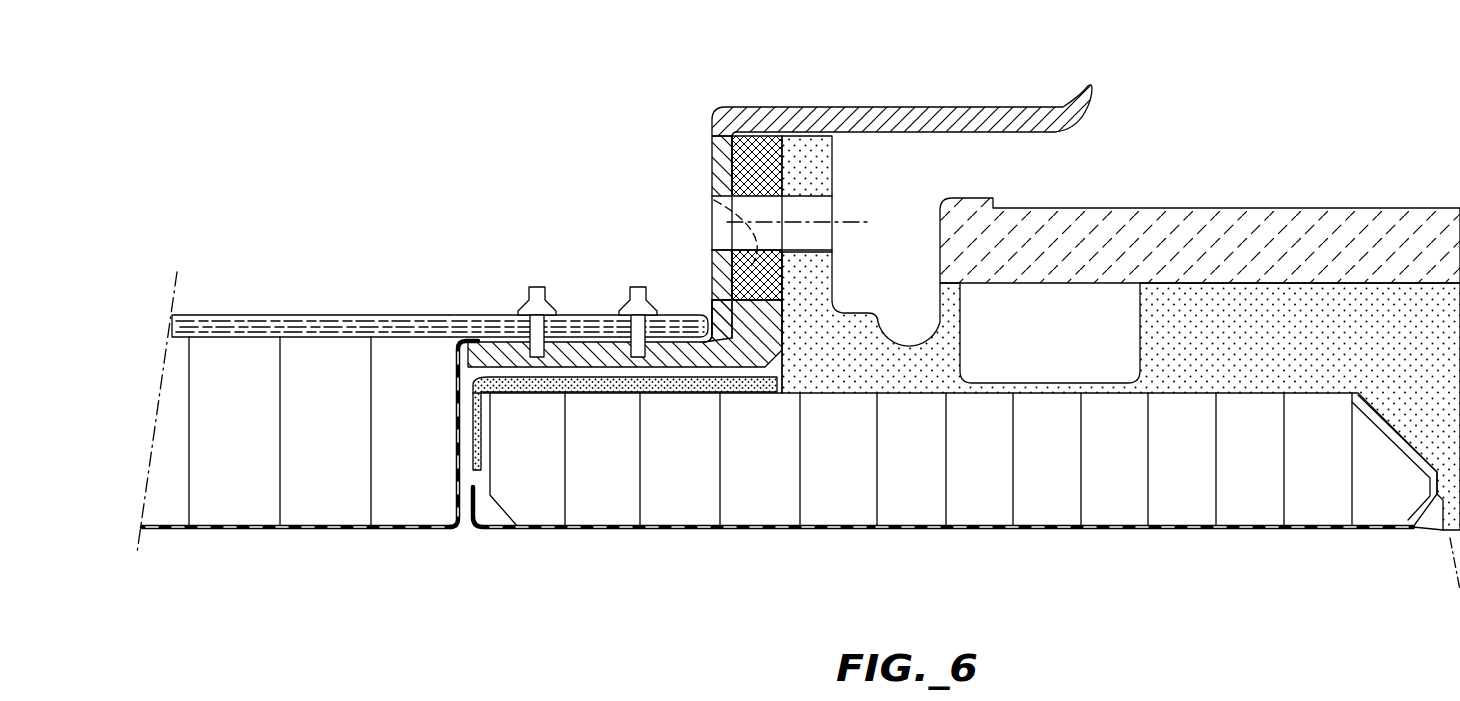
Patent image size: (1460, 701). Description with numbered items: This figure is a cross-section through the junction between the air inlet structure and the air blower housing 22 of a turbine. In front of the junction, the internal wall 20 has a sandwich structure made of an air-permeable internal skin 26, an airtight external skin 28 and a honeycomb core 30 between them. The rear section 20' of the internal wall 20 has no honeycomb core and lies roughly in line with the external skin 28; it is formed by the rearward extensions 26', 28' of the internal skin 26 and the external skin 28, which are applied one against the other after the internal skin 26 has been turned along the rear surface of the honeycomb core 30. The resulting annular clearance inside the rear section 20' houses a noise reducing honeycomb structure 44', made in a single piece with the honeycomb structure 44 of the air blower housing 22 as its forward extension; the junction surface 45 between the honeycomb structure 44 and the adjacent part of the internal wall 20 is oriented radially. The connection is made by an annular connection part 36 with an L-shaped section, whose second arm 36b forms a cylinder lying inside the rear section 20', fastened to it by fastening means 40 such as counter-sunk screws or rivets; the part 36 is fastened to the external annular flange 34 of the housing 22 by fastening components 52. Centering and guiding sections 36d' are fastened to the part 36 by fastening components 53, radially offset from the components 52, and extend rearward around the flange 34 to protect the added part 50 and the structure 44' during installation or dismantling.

The internal wall 20 is at (301, 280).
The rear section 20' is at (664, 280).
The air blower housing 22 is at (1233, 283).
The internal skin 26 is at (297, 570).
The extension of the internal skin 26' is at (533, 280).
The external skin 28 is at (312, 278).
The extension of the external skin 28' is at (578, 277).
The honeycomb core 30 is at (310, 465).
The external annular flange 34 is at (818, 164).
The annular connection part 36 is at (712, 141).
The second arm 36b is at (504, 353).
The centering and guiding sections 36d' is at (902, 74).
The fastening means 40 is at (627, 350).
The honeycomb structure 44 is at (1156, 506).
The noise reducing honeycomb structure 44' is at (671, 550).
The junction surface 45 is at (462, 490).
The added part 50 is at (678, 392).
The fastening components 52 is at (836, 222).
The fastening components 53 is at (718, 199).